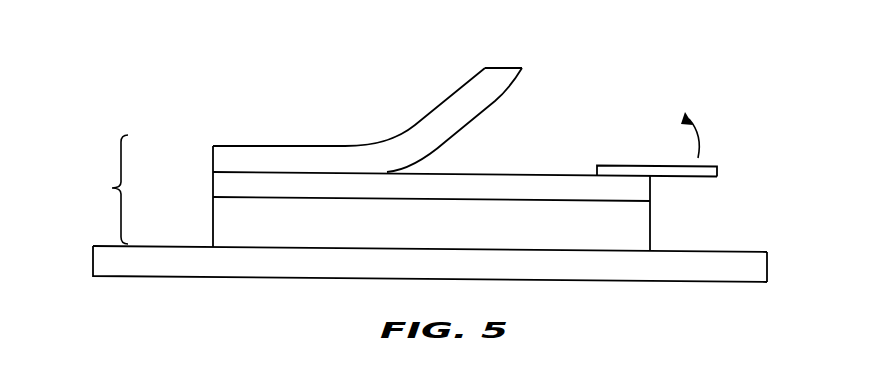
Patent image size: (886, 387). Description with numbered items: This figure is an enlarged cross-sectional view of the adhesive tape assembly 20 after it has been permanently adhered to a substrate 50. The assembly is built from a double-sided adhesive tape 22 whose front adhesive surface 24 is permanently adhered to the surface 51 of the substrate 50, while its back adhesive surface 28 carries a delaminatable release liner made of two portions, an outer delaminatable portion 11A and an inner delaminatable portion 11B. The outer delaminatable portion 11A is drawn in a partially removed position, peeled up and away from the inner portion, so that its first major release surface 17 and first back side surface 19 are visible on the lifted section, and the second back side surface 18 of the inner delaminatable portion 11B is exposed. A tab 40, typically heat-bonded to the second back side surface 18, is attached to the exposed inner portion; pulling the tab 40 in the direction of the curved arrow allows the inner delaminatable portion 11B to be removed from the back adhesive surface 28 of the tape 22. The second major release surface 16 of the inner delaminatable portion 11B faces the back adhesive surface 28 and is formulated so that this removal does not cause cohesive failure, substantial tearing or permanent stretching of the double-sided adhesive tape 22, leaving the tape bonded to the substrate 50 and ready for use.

The adhesive tape assembly 20 is at (102, 189).
The outer delaminatable portion 11A is at (227, 156).
The inner delaminatable portion 11B is at (227, 187).
The double-sided adhesive tape 22 is at (227, 223).
The first major release surface 17 is at (441, 106).
The first back side surface 19 is at (492, 104).
The second back side surface 18 is at (520, 175).
The second major release surface 16 is at (598, 200).
The back adhesive surface 28 is at (598, 200).
The tab 40 is at (713, 172).
The front adhesive surface 24 is at (623, 250).
The substrate 50 is at (100, 264).
The substrate surface 51 is at (748, 251).